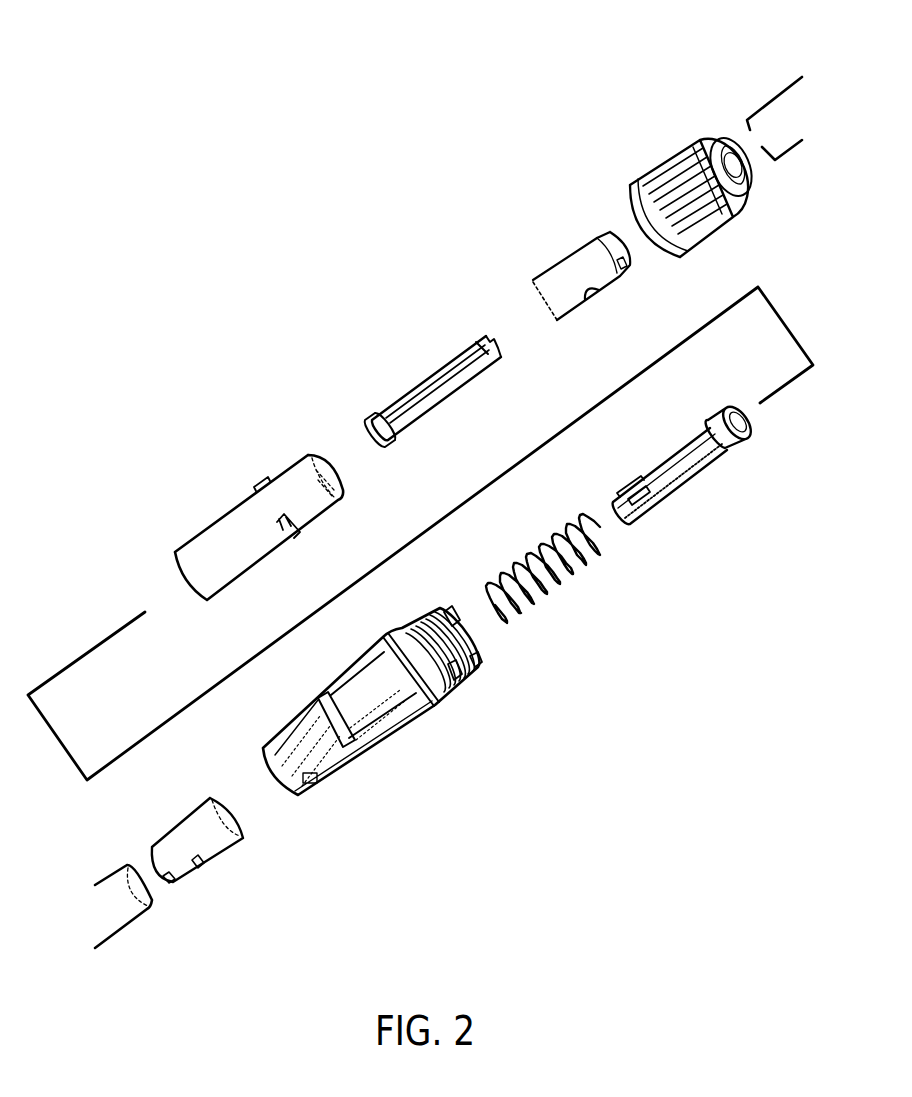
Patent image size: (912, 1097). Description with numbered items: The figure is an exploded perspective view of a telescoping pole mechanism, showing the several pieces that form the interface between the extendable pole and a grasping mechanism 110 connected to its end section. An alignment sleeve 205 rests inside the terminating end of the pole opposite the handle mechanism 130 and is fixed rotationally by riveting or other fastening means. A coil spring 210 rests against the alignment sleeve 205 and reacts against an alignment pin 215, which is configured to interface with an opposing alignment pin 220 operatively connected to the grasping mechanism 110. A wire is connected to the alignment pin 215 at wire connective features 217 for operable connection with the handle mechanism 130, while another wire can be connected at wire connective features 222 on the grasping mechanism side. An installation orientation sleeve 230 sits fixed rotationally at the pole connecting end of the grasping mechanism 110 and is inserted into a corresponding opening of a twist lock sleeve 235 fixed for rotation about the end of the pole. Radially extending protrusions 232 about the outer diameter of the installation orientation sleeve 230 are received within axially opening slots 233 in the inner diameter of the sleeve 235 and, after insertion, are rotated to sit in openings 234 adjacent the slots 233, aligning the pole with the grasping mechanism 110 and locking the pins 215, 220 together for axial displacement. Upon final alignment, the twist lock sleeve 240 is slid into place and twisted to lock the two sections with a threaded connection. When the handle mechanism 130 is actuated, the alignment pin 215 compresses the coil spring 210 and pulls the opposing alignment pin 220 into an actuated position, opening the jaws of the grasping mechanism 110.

The grasping mechanism 110 is at (783, 108).
The handle mechanism 130 is at (118, 903).
The alignment sleeve 205 is at (210, 848).
The coil spring 210 is at (560, 582).
The alignment pin 215 is at (692, 477).
The wire connective features 217 is at (630, 502).
The opposing alignment pin 220 is at (387, 412).
The wire connective features 222 is at (468, 348).
The installation orientation sleeve 230 is at (210, 538).
The radially extending protrusions 232 is at (260, 478).
The slots 233 is at (450, 610).
The openings 234 is at (432, 613).
The twist lock sleeve 235 is at (395, 733).
The twist lock sleeve 240 is at (660, 157).